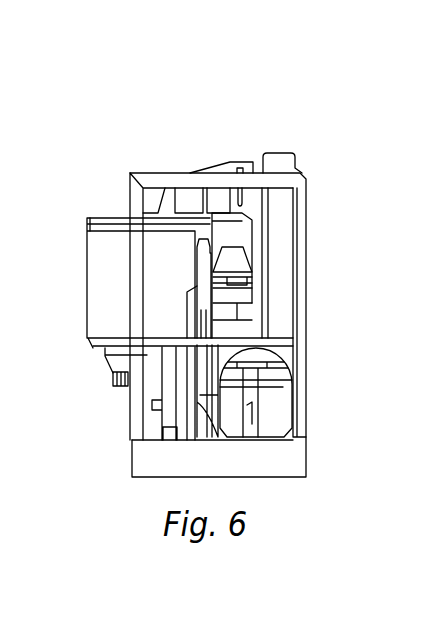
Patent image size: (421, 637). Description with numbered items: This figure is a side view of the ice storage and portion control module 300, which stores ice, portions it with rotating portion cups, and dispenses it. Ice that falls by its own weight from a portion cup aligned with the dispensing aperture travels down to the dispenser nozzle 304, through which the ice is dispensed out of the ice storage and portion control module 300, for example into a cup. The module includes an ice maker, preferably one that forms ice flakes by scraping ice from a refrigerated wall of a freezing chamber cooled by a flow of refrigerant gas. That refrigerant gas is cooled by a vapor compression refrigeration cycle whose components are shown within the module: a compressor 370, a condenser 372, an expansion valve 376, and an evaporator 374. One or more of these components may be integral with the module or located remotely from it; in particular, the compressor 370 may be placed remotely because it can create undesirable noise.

The ice storage and portion control module 300 is at (288, 128).
The expansion valve 376 is at (205, 272).
The evaporator 374 is at (262, 271).
The dispenser nozzle 304 is at (113, 378).
The condenser 372 is at (160, 390).
The compressor 370 is at (233, 410).